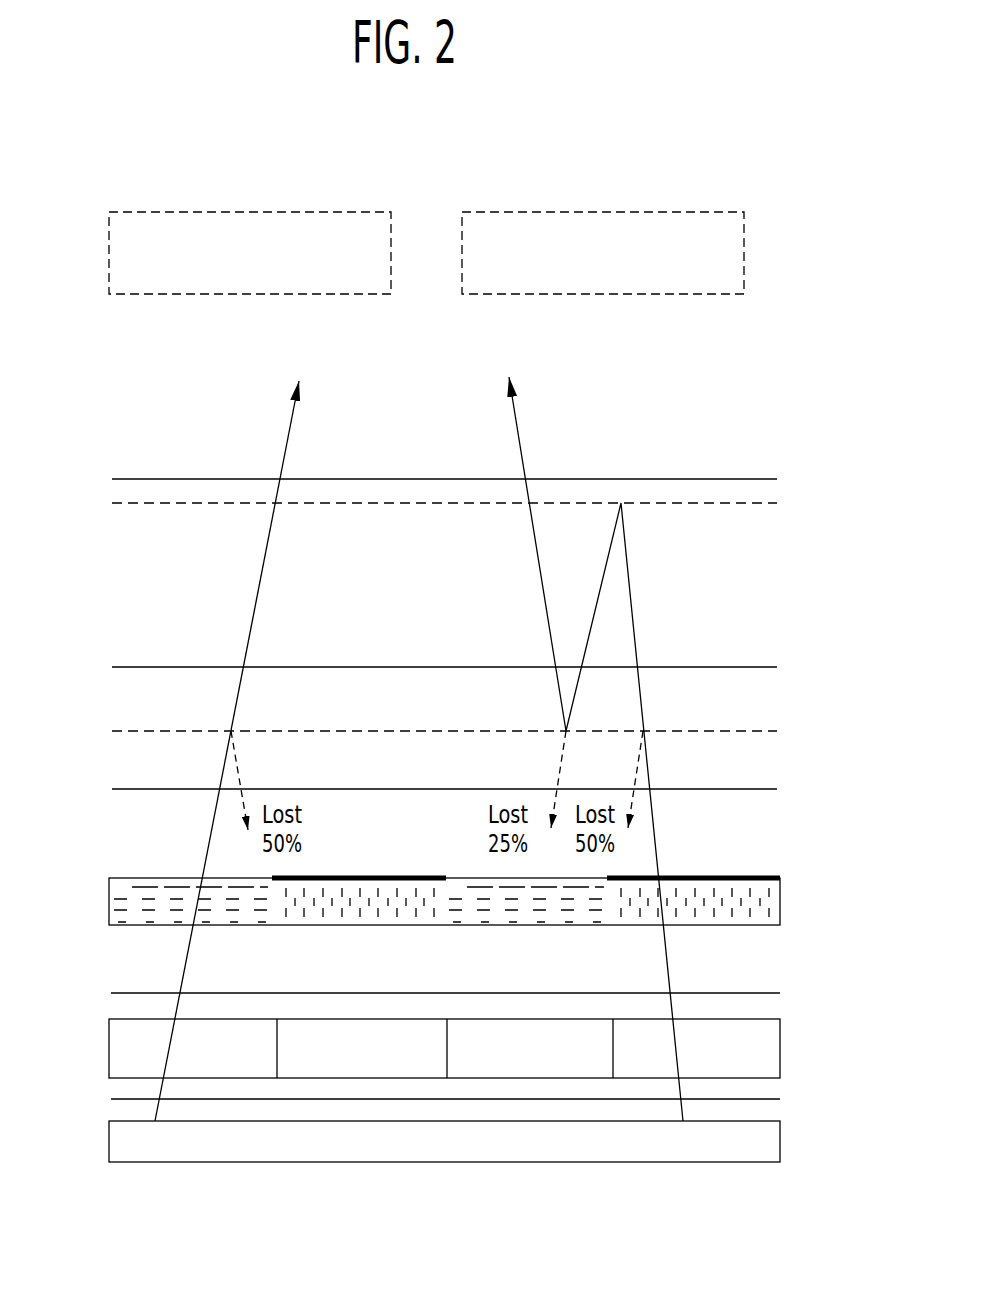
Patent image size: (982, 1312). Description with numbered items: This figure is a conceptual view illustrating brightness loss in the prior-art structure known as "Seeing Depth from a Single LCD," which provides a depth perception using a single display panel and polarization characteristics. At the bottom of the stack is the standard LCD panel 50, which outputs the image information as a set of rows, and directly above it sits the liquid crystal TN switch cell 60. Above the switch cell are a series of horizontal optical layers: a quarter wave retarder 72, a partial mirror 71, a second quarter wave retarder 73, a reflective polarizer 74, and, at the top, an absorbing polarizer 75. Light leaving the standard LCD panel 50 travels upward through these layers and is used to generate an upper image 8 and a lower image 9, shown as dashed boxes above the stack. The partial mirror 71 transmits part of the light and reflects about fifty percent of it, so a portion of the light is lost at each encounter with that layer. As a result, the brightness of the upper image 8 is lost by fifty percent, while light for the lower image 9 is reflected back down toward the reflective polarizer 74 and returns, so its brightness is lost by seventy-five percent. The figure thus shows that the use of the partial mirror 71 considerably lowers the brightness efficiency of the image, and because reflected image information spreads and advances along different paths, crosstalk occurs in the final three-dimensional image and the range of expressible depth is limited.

The upper image 8 is at (246, 212).
The lower image 9 is at (602, 212).
The absorbing polarizer 75 is at (98, 478).
The reflective polarizer 74 is at (98, 505).
The quarter wave retarder 73 is at (98, 667).
The partial mirror 71 is at (98, 731).
The quarter wave retarder 72 is at (98, 789).
The liquid crystal TN switch cell 60 is at (98, 902).
The standard LCD panel 50 is at (798, 993).